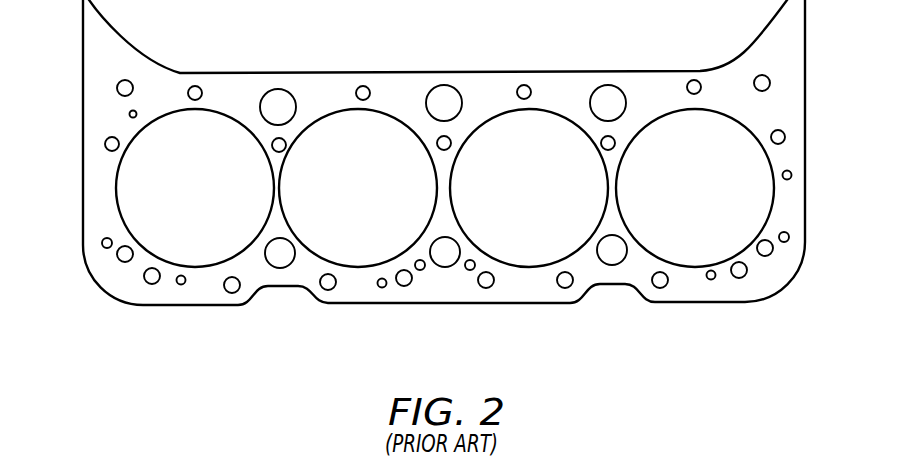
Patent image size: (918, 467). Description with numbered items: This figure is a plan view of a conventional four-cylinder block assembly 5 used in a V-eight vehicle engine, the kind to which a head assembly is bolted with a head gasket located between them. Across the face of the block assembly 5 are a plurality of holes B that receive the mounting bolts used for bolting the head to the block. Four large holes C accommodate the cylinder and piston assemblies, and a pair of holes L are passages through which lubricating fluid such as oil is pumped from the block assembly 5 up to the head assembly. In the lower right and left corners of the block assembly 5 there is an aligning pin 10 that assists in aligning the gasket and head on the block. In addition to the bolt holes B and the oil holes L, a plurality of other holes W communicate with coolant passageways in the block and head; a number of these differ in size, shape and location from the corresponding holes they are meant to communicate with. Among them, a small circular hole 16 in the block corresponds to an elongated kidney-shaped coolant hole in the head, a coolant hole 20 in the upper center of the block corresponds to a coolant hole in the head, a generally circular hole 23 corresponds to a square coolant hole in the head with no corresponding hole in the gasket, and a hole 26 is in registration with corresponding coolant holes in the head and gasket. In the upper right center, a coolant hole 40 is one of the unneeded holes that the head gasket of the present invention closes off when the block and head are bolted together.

The block assembly 5 is at (810, 262).
The pin 10 is at (102, 244).
The small circular hole 16 is at (382, 288).
The coolant hole 20 is at (446, 85).
The generally circular hole 23 is at (453, 247).
The hole 26 is at (278, 89).
The coolant hole 40 is at (609, 85).
The holes B is at (197, 86).
The holes C is at (200, 205).
The holes L is at (117, 85).
The holes W is at (135, 111).